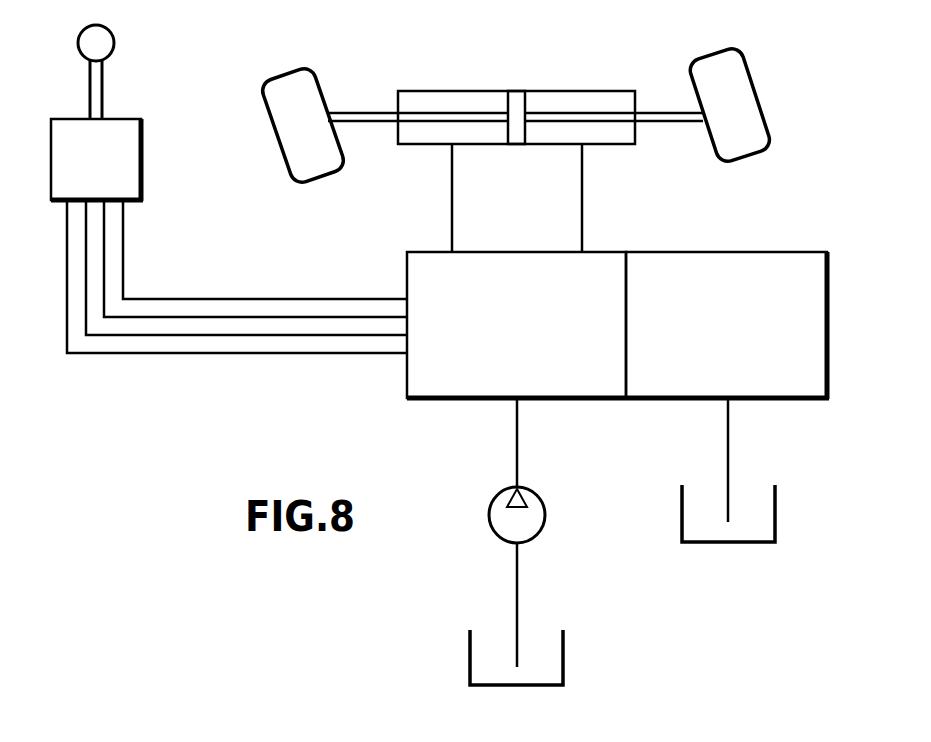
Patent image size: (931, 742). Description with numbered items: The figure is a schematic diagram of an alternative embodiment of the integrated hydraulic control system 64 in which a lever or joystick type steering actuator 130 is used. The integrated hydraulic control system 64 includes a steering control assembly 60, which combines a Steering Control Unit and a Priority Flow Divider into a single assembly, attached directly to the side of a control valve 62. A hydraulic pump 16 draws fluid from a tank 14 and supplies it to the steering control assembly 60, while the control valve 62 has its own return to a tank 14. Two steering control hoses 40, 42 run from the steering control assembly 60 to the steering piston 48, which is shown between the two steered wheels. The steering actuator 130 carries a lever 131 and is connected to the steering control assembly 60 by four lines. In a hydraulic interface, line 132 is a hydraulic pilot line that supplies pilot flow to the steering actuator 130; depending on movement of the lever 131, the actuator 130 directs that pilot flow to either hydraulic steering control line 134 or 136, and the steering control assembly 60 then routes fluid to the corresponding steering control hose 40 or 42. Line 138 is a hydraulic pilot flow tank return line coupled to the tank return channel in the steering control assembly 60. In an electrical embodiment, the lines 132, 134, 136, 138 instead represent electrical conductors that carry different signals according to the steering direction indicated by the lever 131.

The tank 14 is at (565, 656).
The hydraulic pump 16 is at (546, 514).
The steering control hose 40 is at (452, 208).
The steering control hose 42 is at (584, 205).
The steering piston 48 is at (582, 90).
The steering control assembly 60 is at (517, 251).
The control valve 62 is at (737, 251).
The integrated hydraulic control system 64 is at (634, 275).
The steering actuator 130 is at (144, 163).
The lever 131 is at (89, 90).
The hydraulic pilot line 132 is at (225, 297).
The hydraulic steering control line 134 is at (287, 315).
The hydraulic steering control line 136 is at (317, 337).
The hydraulic pilot flow tank return line 138 is at (250, 355).